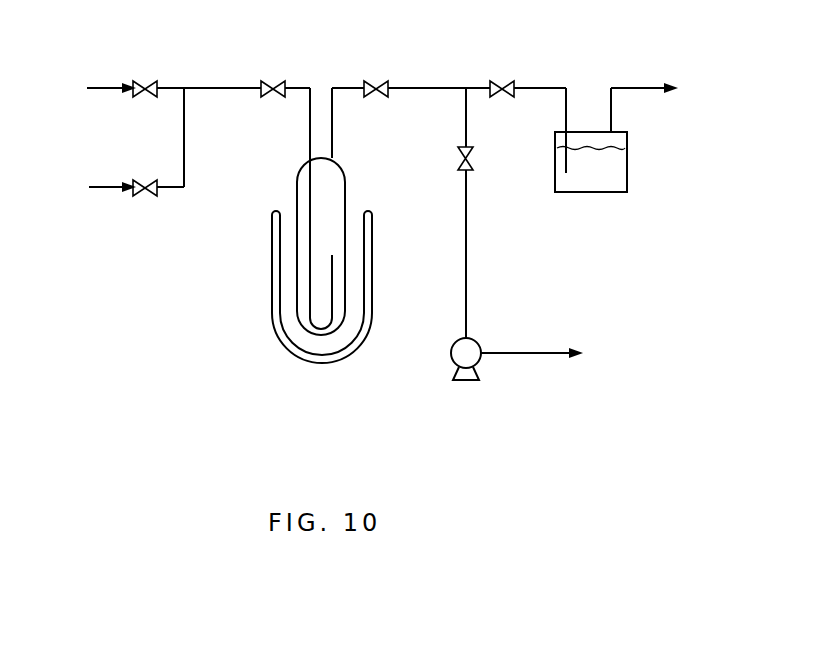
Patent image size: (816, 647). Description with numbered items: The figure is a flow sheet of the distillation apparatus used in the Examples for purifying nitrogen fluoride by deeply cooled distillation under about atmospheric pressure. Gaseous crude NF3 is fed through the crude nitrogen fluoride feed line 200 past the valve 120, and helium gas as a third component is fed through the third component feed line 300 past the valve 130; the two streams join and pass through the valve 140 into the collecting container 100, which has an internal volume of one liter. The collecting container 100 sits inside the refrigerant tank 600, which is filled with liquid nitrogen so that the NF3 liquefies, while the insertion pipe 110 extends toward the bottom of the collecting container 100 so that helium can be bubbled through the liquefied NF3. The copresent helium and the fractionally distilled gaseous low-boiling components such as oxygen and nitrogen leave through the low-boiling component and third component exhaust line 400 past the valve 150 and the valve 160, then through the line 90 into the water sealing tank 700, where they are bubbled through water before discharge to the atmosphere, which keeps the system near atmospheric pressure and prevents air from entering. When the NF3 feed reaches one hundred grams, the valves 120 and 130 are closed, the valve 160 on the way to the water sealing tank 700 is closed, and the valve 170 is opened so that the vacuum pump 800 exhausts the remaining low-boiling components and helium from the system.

The crude nitrogen fluoride feed line 200 is at (93, 88).
The valve 120 is at (144, 82).
The valve 140 is at (271, 81).
The valve 150 is at (369, 81).
The low-boiling component and third component exhaust line 400 is at (424, 86).
The valve 160 is at (497, 81).
The outlet line 90 is at (556, 88).
The insertion pipe 110 is at (307, 193).
The collecting container 100 is at (340, 325).
The refrigerant tank 600 is at (295, 355).
The third component feed line 300 is at (103, 190).
The valve 130 is at (145, 197).
The valve 170 is at (457, 165).
The water sealing tank 700 is at (605, 193).
The vacuum pump 800 is at (468, 382).